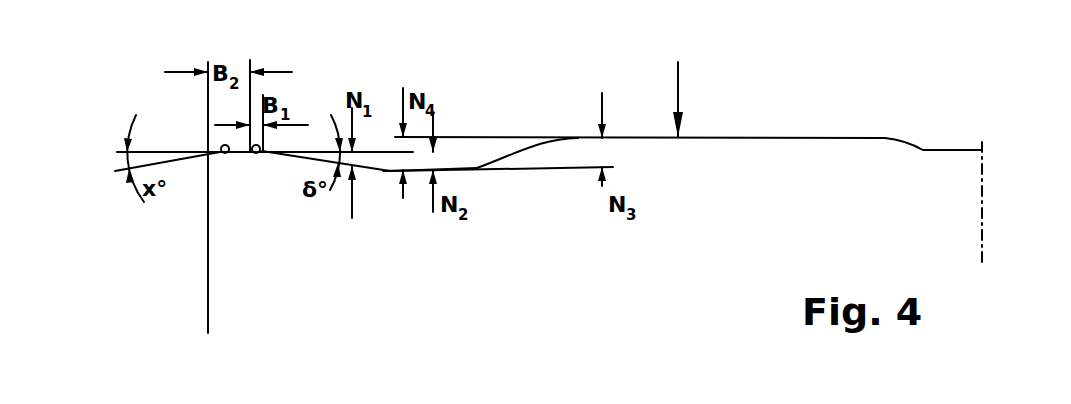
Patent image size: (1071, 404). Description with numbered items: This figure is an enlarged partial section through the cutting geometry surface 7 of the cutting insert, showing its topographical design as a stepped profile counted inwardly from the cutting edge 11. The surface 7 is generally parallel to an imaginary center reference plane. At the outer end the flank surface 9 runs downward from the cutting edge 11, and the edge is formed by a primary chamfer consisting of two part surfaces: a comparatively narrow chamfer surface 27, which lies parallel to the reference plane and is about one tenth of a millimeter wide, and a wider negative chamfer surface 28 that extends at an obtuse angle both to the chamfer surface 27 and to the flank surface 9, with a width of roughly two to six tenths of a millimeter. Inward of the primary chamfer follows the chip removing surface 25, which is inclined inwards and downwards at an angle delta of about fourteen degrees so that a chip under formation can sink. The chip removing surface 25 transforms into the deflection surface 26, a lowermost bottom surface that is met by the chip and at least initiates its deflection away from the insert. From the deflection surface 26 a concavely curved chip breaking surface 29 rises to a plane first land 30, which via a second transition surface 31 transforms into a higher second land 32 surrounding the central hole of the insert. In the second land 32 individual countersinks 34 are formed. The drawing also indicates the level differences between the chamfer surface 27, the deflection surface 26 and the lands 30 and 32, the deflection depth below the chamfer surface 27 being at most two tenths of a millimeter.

The cutting geometry surface 7 is at (676, 87).
The flank surface 9 is at (208, 255).
The cutting edge 11 is at (205, 150).
The chip removing surface 25 is at (306, 160).
The deflection surface 26 is at (361, 172).
The chamfer surface 27 is at (265, 153).
The negative chamfer surface 28 is at (229, 153).
The chip breaking surface 29 is at (385, 170).
The first land 30 is at (458, 168).
The second transition surface 31 is at (521, 150).
The second land 32 is at (745, 138).
The countersink 34 is at (937, 150).